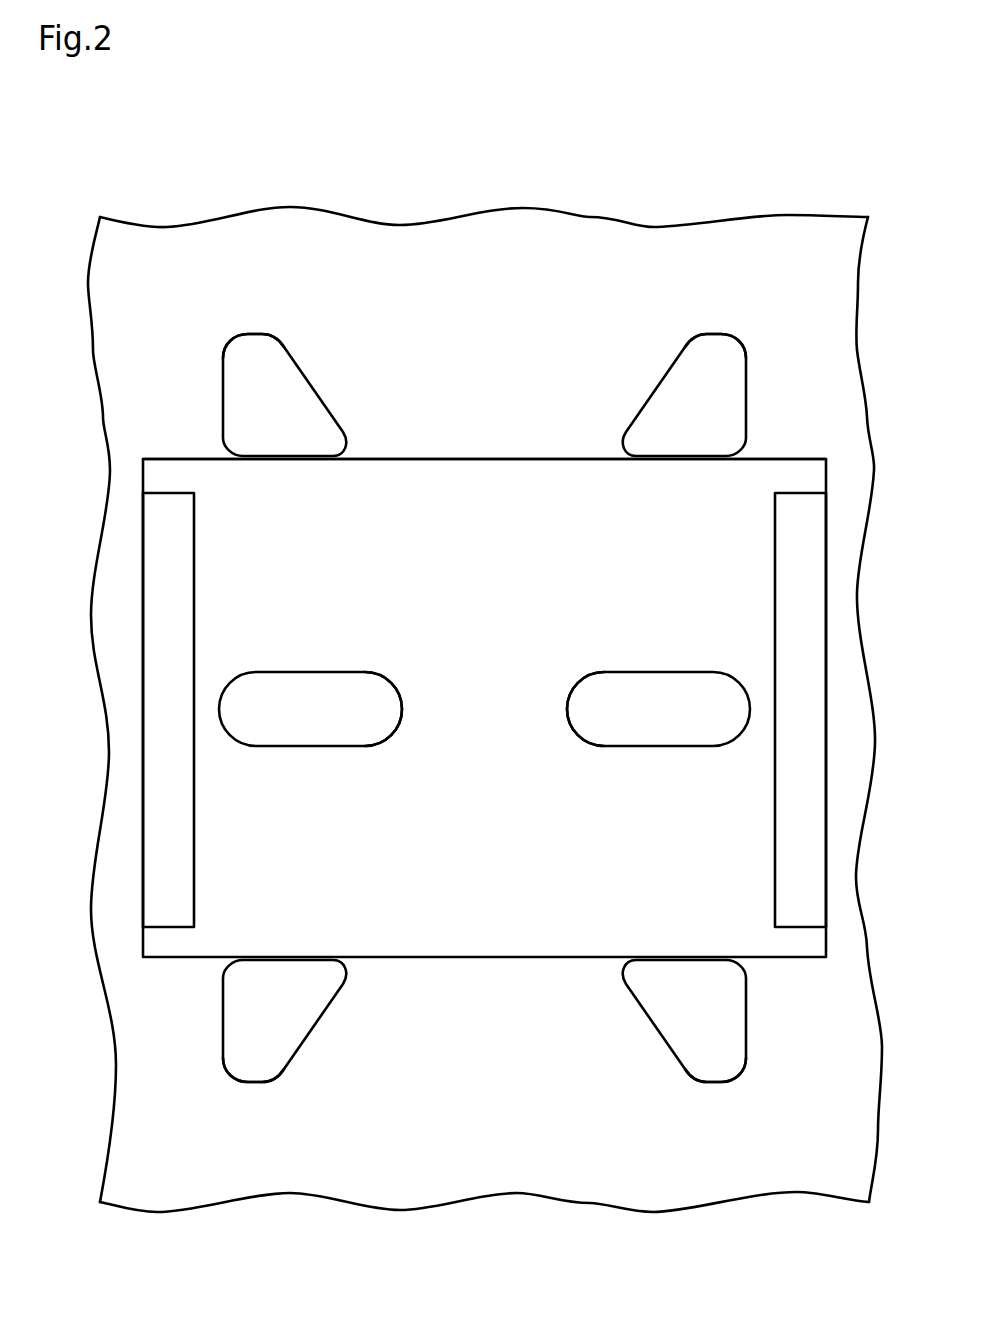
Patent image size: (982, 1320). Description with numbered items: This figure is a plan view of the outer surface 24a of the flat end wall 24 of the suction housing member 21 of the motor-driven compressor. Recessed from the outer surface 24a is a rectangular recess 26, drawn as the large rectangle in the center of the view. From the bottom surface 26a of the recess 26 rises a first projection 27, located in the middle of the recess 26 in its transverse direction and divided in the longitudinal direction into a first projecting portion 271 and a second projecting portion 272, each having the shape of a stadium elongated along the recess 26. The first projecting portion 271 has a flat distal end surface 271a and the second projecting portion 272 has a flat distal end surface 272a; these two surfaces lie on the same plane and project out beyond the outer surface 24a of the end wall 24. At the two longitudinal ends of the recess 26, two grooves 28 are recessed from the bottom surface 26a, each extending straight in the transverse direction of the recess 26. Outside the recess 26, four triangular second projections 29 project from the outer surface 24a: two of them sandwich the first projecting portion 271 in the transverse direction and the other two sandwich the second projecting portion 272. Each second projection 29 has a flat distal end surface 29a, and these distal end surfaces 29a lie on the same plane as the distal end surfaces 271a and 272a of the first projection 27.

The suction housing member 21 is at (485, 689).
The end wall 24 is at (485, 689).
The outer surface of the end wall 24a is at (490, 227).
The recess 26 is at (484, 677).
The bottom surface of the recess 26a is at (528, 473).
The first projection 27 is at (484, 696).
The first projecting portion 271 is at (337, 720).
The distal end surface of the first projecting portion 271a is at (377, 730).
The second projecting portion 272 is at (629, 720).
The distal end surface of the second projecting portion 272a is at (592, 730).
The grooves 28 is at (197, 573).
The second projections 29 is at (484, 714).
The distal end surface of the second projection 29a is at (267, 351).